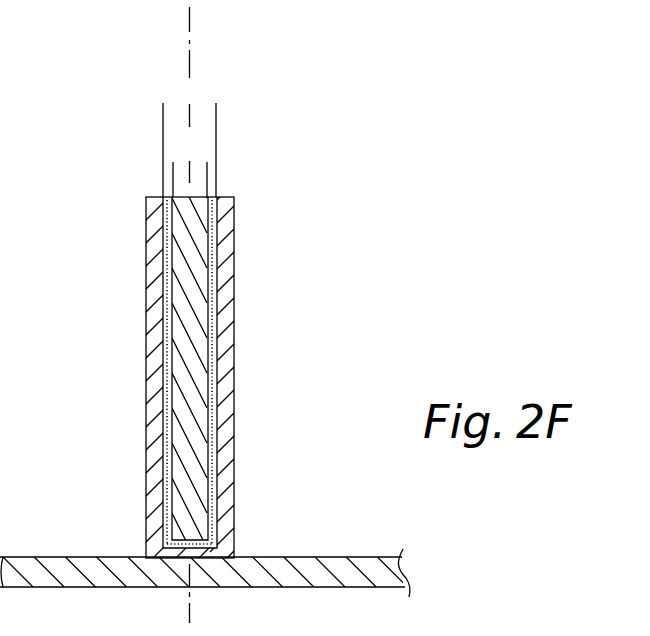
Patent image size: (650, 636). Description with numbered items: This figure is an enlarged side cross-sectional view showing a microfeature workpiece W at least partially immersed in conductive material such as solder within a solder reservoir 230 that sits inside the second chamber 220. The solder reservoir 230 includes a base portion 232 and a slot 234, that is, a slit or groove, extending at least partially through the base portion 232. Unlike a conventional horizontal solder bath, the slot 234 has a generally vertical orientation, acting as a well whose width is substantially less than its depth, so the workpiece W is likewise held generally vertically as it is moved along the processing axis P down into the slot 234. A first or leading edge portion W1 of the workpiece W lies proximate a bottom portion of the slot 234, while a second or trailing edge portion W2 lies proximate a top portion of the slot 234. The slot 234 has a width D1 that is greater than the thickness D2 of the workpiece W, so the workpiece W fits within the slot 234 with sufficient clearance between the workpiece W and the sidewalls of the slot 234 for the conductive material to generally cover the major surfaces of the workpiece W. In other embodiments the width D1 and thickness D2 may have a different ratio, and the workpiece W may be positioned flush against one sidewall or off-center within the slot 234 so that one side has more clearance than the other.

The second chamber 220 is at (365, 524).
The solder reservoir 230 is at (270, 195).
The base portion 232 is at (227, 297).
The slot 234 is at (163, 196).
The microfeature workpiece W is at (198, 360).
The leading edge portion W1 is at (190, 525).
The trailing edge portion W2 is at (192, 210).
The width of the slot D1 is at (216, 112).
The thickness of the workpiece D2 is at (207, 168).
The processing axis P is at (189, 31).